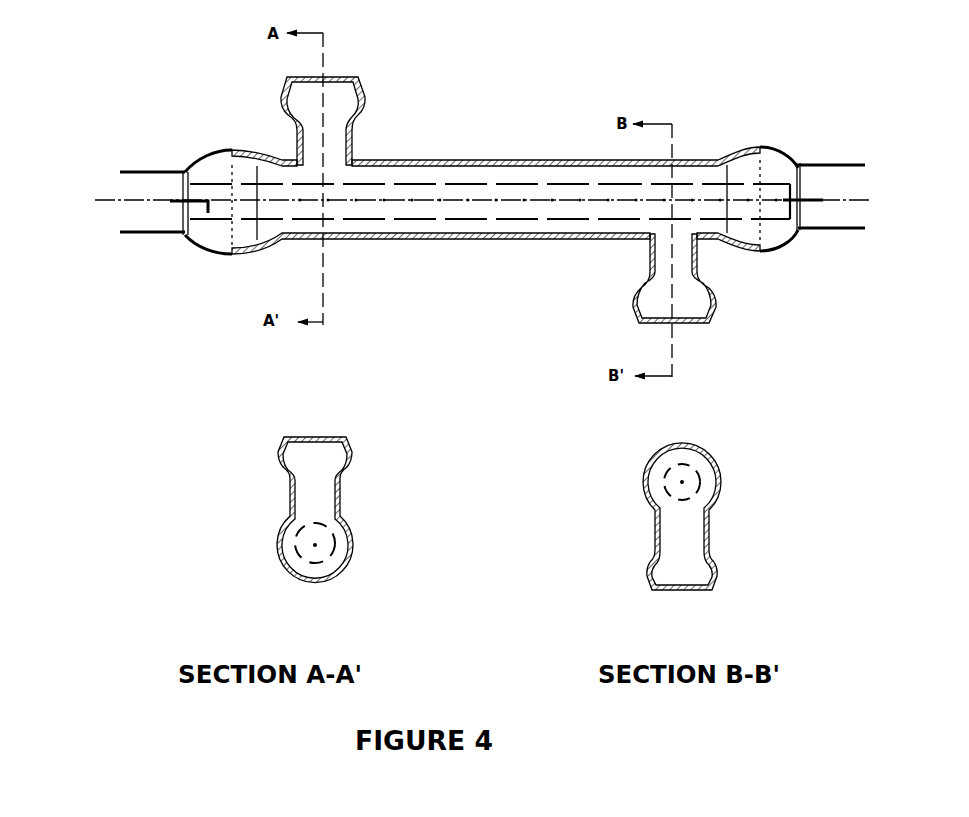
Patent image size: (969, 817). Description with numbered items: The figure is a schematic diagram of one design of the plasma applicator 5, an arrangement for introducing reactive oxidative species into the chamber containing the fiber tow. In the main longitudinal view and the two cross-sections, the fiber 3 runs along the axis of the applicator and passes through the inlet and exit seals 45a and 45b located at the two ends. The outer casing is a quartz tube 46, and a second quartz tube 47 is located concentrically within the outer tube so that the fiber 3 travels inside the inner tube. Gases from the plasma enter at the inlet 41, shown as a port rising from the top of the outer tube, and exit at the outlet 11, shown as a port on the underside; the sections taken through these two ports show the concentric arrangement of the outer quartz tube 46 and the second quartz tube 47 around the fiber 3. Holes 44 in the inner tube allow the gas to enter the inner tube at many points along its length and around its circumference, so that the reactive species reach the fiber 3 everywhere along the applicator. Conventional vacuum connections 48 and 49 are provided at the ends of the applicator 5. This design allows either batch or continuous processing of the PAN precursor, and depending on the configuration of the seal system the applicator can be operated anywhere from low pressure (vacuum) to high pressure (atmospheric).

The plasma applicator 5 is at (105, 42).
The fiber 3 is at (95, 200).
The gas inlet 41 is at (318, 75).
The gas exit 11 is at (685, 327).
The holes 44 is at (497, 223).
The quartz tube 46 is at (515, 160).
The second quartz tube 47 is at (625, 182).
The vacuum connection 48 is at (780, 153).
The vacuum connection 49 is at (210, 153).
The inlet seal 45a is at (820, 207).
The exit seal 45b is at (208, 207).